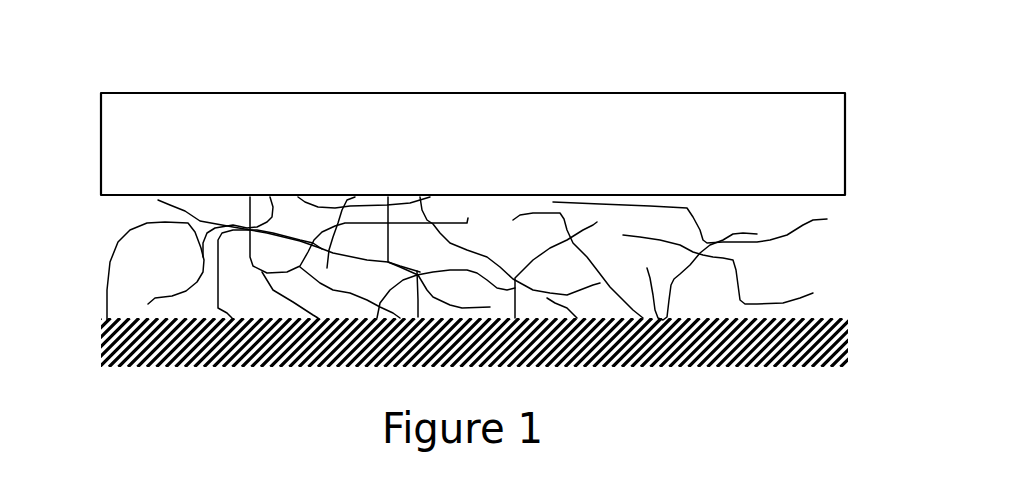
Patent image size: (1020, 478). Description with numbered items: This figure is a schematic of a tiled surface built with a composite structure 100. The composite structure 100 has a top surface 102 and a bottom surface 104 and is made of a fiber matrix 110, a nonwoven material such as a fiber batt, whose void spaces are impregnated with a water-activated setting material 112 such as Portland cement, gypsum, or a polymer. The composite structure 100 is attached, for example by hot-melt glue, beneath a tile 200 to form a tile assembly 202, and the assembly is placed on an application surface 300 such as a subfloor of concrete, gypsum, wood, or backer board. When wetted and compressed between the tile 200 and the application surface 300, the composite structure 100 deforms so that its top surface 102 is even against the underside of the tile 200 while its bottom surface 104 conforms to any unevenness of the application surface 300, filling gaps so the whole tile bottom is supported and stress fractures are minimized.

The composite structure 100 is at (93, 200).
The top surface 102 is at (480, 197).
The bottom surface 104 is at (687, 276).
The fiber matrix 110 is at (740, 282).
The water-activated setting material 112 is at (728, 219).
The tile 200 is at (518, 150).
The tile assembly 202 is at (863, 93).
The application surface 300 is at (215, 352).